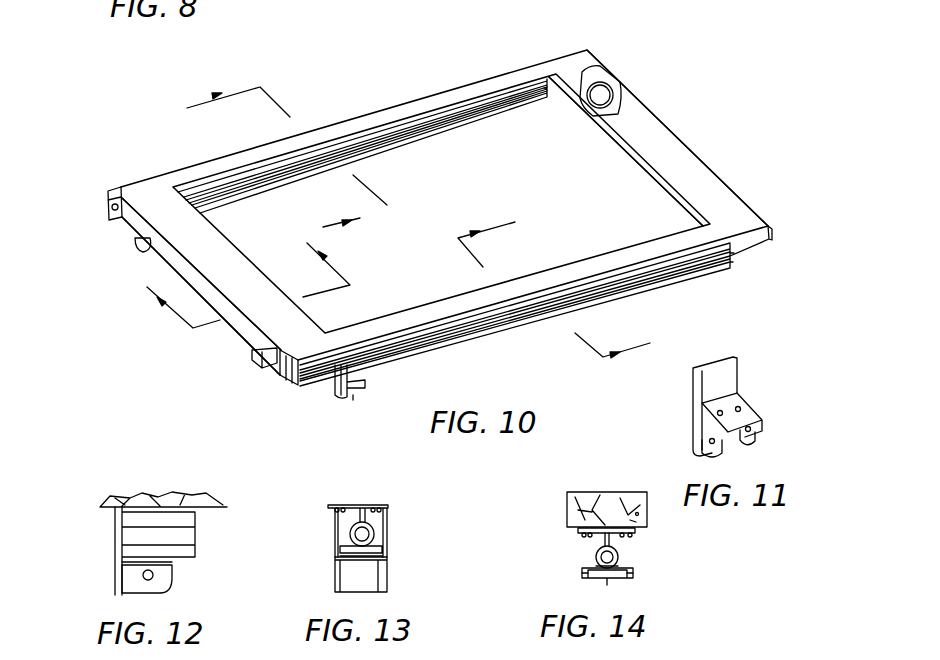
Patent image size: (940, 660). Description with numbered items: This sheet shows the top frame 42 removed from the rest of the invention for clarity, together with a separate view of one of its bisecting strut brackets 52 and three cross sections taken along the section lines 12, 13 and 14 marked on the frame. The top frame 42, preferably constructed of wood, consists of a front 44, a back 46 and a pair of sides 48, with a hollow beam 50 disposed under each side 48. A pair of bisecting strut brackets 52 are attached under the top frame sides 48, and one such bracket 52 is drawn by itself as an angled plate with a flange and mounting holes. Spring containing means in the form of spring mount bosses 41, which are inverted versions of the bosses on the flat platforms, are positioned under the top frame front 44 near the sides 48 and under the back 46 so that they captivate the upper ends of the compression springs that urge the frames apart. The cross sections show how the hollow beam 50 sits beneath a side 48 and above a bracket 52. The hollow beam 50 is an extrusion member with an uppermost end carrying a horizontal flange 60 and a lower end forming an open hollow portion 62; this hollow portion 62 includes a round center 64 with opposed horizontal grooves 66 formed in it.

In FIG. 10, the section line 12— 12 is at (235, 280).
In FIG. 10, the section line 13— 13 is at (267, 157).
In FIG. 10, the section line 14— 14 is at (572, 279).
In FIG. 10, the spring mount boss 41 is at (615, 86).
In FIG. 10, the top frame 42 is at (508, 64).
In FIG. 10, the front 44 is at (200, 300).
In FIG. 12, the front 44 is at (150, 490).
In FIG. 10, the back 46 is at (673, 130).
In FIG. 10, the side 48 is at (380, 108).
In FIG. 14, the side 48 is at (607, 490).
In FIG. 10, the hollow beam 50 is at (270, 172).
In FIG. 13, the hollow beam 50 is at (370, 503).
In FIG. 14, the hollow beam 50 is at (593, 557).
In FIG. 10, the bisecting strut bracket 52 is at (353, 400).
In FIG. 11, the bisecting strut bracket 52 is at (757, 417).
In FIG. 12, the bisecting strut bracket 52 is at (172, 575).
In FIG. 13, the bisecting strut bracket 52 is at (385, 565).
In FIG. 14, the horizontal flange 60 is at (565, 522).
In FIG. 14, the open hollow portion 62 is at (605, 590).
In FIG. 14, the round center 64 is at (618, 553).
In FIG. 14, the horizontal grooves 66 is at (590, 580).